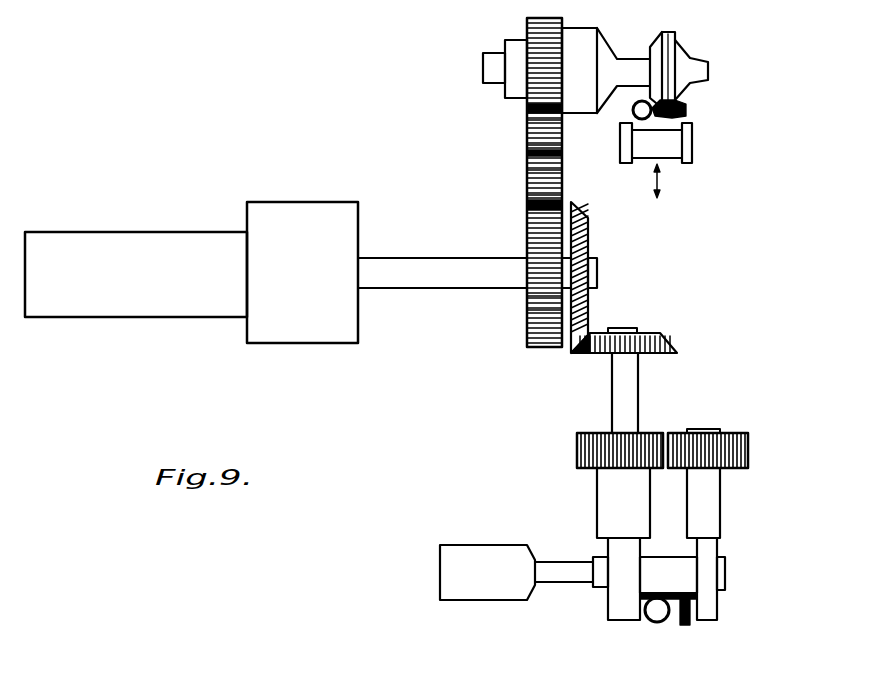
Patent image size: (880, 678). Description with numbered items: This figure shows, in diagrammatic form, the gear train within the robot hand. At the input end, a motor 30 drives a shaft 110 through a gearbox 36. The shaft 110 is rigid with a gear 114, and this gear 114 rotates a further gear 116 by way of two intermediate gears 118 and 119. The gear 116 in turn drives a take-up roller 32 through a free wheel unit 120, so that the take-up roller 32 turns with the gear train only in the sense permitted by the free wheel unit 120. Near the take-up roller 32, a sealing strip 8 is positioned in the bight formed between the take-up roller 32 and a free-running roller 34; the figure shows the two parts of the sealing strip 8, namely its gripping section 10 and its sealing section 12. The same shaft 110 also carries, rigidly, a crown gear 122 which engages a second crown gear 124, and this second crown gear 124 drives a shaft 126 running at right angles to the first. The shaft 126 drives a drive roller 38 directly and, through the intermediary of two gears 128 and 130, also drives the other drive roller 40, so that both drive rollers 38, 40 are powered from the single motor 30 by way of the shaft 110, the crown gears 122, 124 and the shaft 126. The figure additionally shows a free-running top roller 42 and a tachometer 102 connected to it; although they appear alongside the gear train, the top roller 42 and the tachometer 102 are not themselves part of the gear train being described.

The motor 30 is at (82, 248).
The gearbox 36 is at (260, 216).
The shaft 110 is at (418, 265).
The gear 116 is at (527, 30).
The intermediate gear 118 is at (527, 135).
The intermediate gear 119 is at (527, 183).
The gear 114 is at (535, 302).
The free wheel unit 120 is at (583, 37).
The take-up roller 32 is at (677, 52).
The sealing strip 8 is at (683, 103).
The sealing section 12 is at (632, 103).
The gripping section 10 is at (678, 112).
The free-running roller 34 is at (669, 150).
The crown gear 122 is at (588, 250).
The second crown gear 124 is at (668, 338).
The shaft 126 is at (629, 372).
The gear 128 is at (597, 433).
The gear 130 is at (728, 432).
The drive roller 38 is at (623, 590).
The drive roller 40 is at (707, 600).
The free-running top roller 42 is at (665, 565).
The tachometer 102 is at (495, 560).